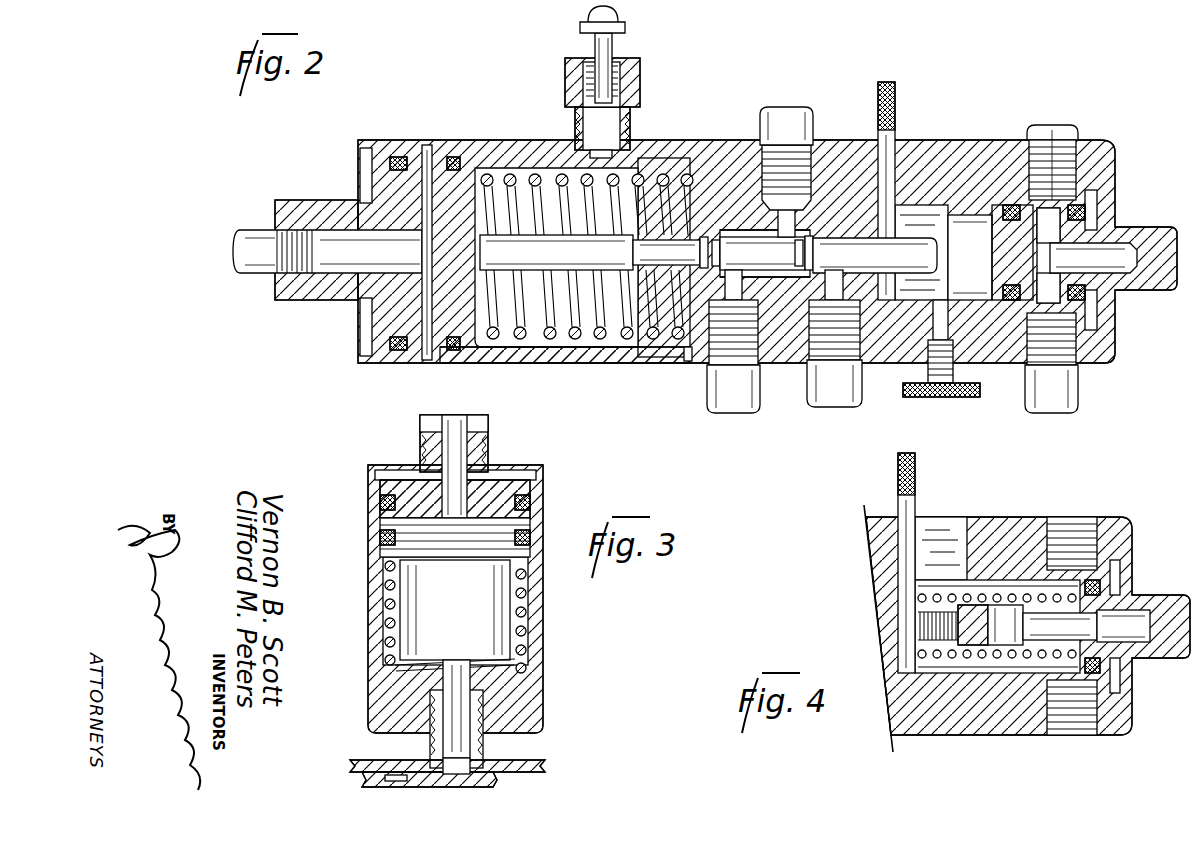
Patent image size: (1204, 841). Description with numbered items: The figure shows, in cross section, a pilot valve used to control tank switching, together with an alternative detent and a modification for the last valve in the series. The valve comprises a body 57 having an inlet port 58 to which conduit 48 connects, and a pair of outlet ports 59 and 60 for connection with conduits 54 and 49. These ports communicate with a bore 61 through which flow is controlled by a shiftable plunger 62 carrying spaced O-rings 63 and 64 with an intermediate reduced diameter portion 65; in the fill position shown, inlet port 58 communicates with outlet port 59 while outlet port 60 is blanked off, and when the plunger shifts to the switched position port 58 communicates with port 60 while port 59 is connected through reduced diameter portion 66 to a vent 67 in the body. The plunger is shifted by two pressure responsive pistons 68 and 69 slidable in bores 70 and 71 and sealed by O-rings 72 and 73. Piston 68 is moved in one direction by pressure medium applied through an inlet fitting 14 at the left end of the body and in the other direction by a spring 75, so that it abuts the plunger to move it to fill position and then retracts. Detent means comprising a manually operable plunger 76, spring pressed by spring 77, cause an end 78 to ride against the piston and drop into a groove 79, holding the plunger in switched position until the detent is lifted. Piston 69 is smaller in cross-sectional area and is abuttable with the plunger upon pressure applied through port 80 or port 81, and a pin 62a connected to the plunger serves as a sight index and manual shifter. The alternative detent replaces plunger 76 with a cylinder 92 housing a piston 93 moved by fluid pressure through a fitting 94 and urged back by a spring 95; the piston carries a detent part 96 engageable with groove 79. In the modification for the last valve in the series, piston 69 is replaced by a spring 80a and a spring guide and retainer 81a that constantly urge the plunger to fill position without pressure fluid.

In FIG. 2, the inlet fitting 14 is at (338, 205).
In FIG. 2, the conduit 48 is at (790, 107).
In FIG. 2, the conduit 49 is at (862, 390).
In FIG. 2, the conduit 54 is at (730, 405).
In FIG. 2, the valve body 57 is at (715, 152).
In FIG. 3, the valve body 57 is at (545, 765).
In FIG. 4, the valve body 57 is at (940, 535).
In FIG. 2, the inlet port 58 is at (805, 238).
In FIG. 2, the outlet port 59 is at (744, 290).
In FIG. 2, the outlet port 60 is at (840, 290).
In FIG. 2, the bore 61 is at (752, 232).
In FIG. 2, the shiftable plunger 62 is at (916, 236).
In FIG. 2, the pin 62a is at (896, 135).
In FIG. 4, the pin 62a is at (900, 512).
In FIG. 2, the O-ring 63 is at (705, 236).
In FIG. 2, the O-ring 64 is at (812, 242).
In FIG. 2, the reduced diameter portion 65 is at (762, 253).
In FIG. 2, the reduced diameter portion 66 is at (590, 252).
In FIG. 2, the vent 67 is at (683, 372).
In FIG. 2, the piston 68 is at (428, 190).
In FIG. 3, the piston 68 is at (365, 782).
In FIG. 2, the piston 69 is at (1000, 205).
In FIG. 2, the bore 70 is at (655, 170).
In FIG. 2, the bore 71 is at (1032, 318).
In FIG. 2, the O-ring 72 is at (455, 158).
In FIG. 2, the O-ring 73 is at (1003, 268).
In FIG. 2, the spring 75 is at (502, 172).
In FIG. 2, the manually operable plunger 76 is at (590, 125).
In FIG. 2, the spring 77 is at (580, 80).
In FIG. 2, the end 78 is at (598, 152).
In FIG. 2, the groove 79 is at (540, 362).
In FIG. 3, the groove 79 is at (392, 776).
In FIG. 2, the port 80 is at (1049, 288).
In FIG. 4, the spring 80a is at (1006, 605).
In FIG. 2, the port 81 is at (1049, 225).
In FIG. 4, the spring guide and retainer 81a is at (975, 610).
In FIG. 3, the cylinder 92 is at (543, 622).
In FIG. 3, the piston 93 is at (532, 522).
In FIG. 3, the fitting 94 is at (496, 490).
In FIG. 3, the spring 95 is at (527, 592).
In FIG. 3, the detent part 96 is at (470, 710).